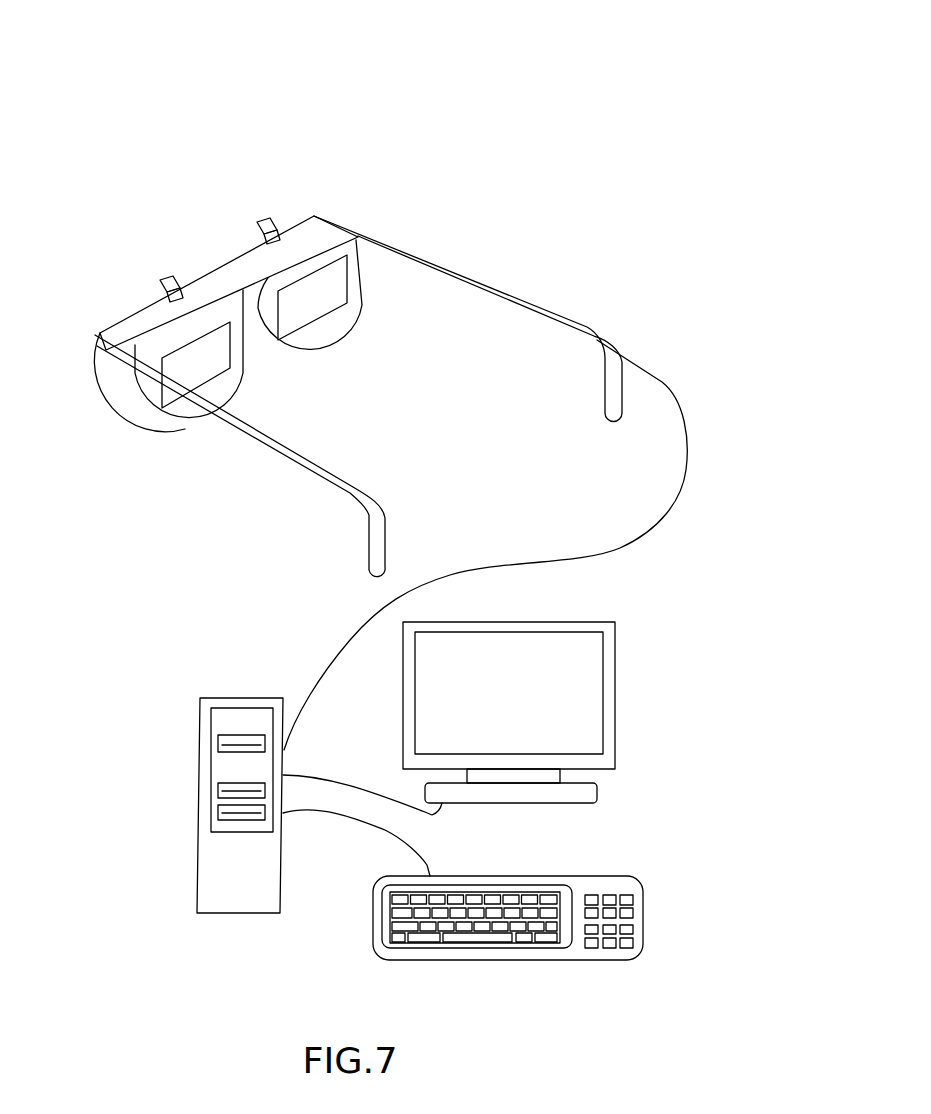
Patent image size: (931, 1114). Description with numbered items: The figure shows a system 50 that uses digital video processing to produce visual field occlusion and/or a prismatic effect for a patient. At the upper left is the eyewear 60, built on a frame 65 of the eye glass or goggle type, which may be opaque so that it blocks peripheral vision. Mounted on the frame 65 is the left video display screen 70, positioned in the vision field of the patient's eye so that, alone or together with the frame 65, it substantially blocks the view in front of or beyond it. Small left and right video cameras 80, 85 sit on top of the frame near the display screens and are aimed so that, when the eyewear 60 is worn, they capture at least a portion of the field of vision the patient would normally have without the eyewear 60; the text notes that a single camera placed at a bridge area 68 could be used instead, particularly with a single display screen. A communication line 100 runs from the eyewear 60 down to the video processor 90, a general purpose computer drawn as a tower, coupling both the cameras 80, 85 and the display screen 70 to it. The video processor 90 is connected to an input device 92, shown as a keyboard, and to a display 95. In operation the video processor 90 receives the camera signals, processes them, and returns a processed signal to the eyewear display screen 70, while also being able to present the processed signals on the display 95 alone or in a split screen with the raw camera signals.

The system 50 is at (569, 51).
The eyewear 60 is at (338, 351).
The frame 65 is at (100, 333).
The bridge area 68 is at (238, 256).
The left video display screen 70 is at (326, 308).
The left video camera 80 is at (163, 284).
The right video camera 85 is at (270, 222).
The video processor 90 is at (198, 805).
The input device 92 is at (643, 912).
The display 95 is at (616, 712).
The communication line 100 is at (688, 478).